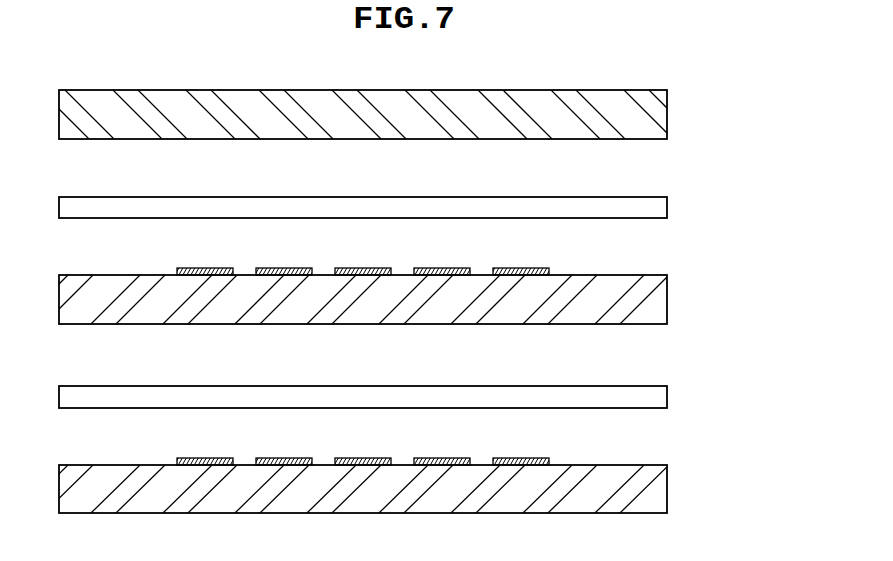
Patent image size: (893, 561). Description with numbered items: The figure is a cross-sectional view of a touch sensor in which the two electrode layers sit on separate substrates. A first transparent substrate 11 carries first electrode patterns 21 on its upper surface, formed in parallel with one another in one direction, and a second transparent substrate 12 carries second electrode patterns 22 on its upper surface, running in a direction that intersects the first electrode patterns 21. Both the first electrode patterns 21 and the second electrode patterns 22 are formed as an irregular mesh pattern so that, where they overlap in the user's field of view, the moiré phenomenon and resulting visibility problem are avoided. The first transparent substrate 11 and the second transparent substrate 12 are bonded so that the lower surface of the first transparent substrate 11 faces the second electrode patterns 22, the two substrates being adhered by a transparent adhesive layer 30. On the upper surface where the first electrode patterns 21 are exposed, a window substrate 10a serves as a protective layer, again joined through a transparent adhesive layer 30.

The window substrate 10a is at (656, 113).
The transparent adhesive layer 30 is at (656, 209).
The first transparent substrate 11 is at (656, 304).
The first electrode patterns 21 is at (519, 268).
The second transparent substrate 12 is at (656, 494).
The second electrode patterns 22 is at (519, 458).